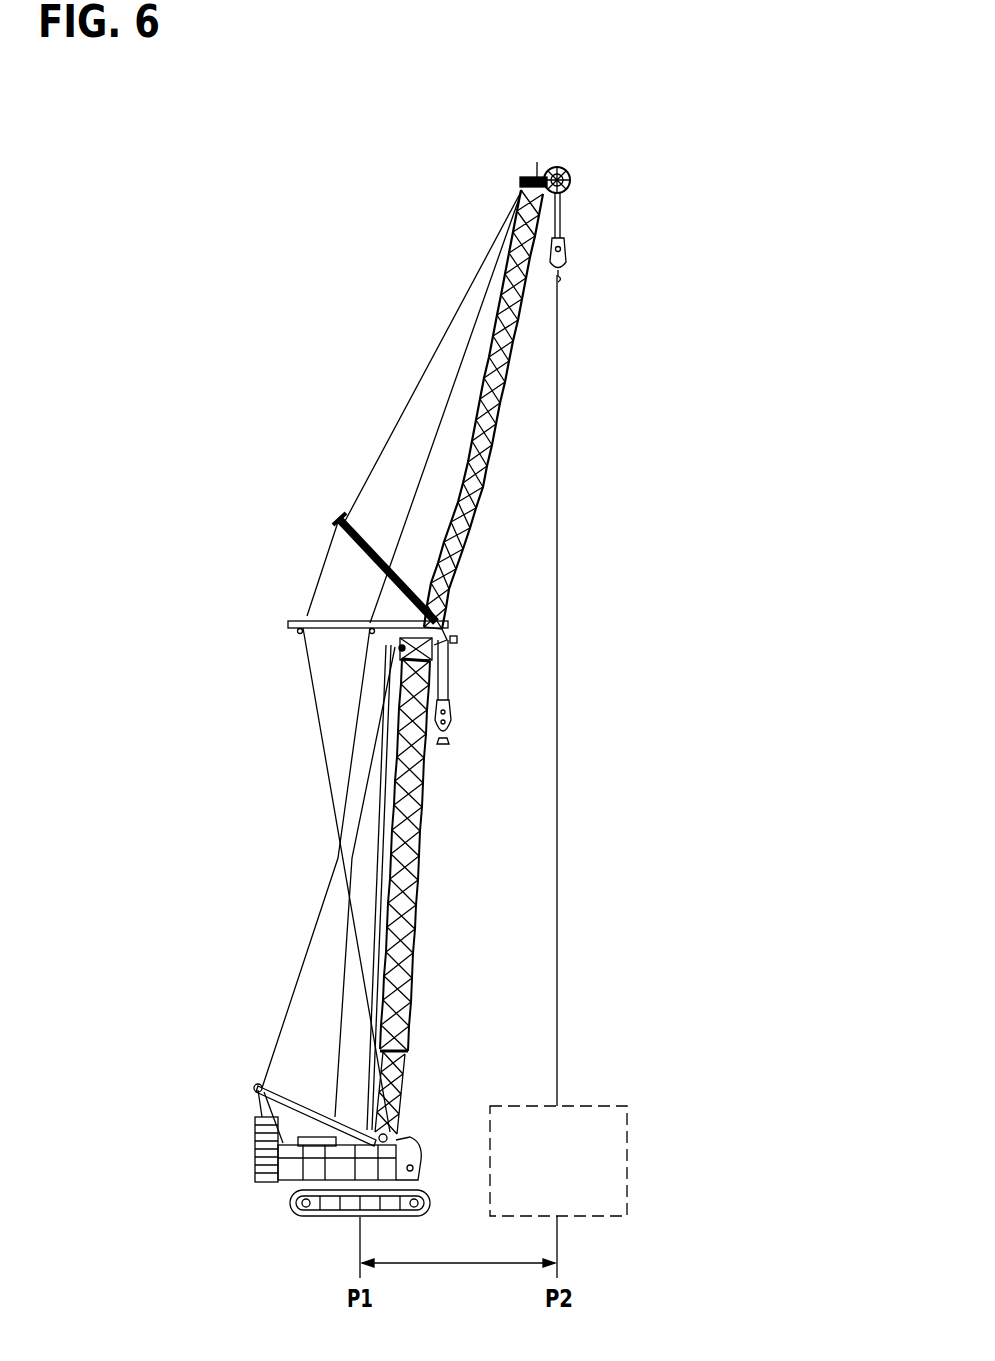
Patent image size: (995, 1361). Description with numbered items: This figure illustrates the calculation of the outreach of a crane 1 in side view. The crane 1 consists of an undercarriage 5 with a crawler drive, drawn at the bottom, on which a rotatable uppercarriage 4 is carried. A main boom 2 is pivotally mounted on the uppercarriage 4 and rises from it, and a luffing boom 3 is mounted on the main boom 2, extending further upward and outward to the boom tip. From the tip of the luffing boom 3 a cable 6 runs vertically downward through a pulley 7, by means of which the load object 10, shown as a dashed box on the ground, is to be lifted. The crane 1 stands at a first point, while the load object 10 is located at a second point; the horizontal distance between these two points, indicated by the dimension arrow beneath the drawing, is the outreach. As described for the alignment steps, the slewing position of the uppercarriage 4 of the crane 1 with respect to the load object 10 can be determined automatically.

The crane 1 is at (328, 789).
The main boom 2 is at (418, 884).
The luffing boom 3 is at (498, 409).
The uppercarriage 4 is at (290, 1168).
The undercarriage 5 is at (290, 1202).
The cable 6 is at (565, 221).
The pulley 7 is at (567, 252).
The load object 10 is at (628, 1159).